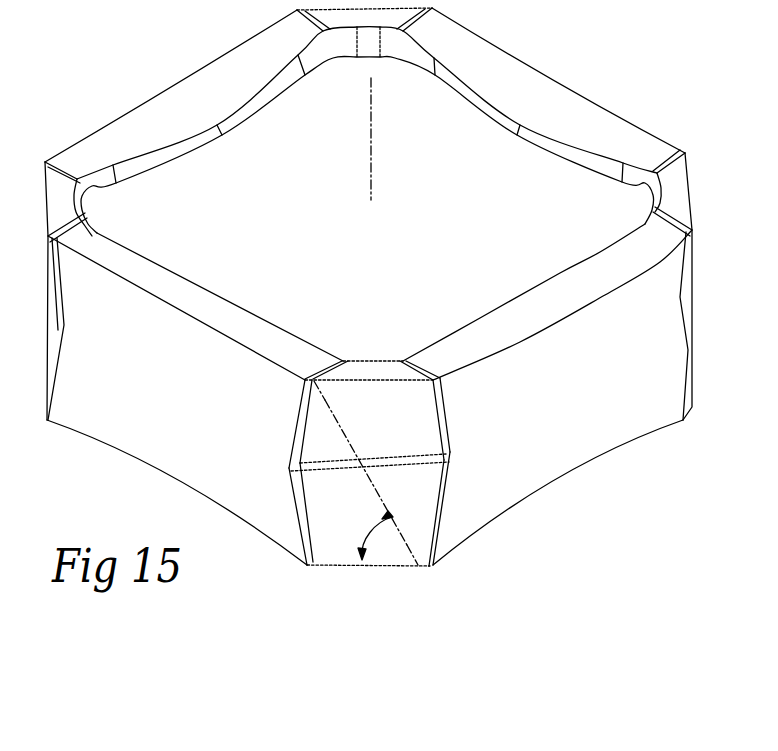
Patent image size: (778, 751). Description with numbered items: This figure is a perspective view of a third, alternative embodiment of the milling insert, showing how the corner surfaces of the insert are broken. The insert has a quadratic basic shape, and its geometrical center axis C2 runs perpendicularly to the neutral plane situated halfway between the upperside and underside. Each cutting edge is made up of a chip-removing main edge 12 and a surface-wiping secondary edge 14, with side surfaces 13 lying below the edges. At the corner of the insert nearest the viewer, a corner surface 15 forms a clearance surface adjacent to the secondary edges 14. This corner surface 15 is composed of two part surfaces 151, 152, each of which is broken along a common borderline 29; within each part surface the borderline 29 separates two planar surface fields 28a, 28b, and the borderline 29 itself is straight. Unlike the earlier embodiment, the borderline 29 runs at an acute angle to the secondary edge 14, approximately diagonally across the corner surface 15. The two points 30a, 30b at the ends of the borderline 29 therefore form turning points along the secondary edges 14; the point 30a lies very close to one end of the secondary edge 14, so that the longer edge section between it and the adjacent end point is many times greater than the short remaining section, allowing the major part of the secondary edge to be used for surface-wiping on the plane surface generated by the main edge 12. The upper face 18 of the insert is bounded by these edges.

The main edge 12 is at (133, 293).
The side surface 13 is at (151, 402).
The secondary edge 14 is at (392, 379).
The corner surface 15 is at (336, 567).
The top rake face 18 is at (522, 224).
The surface field 28a is at (421, 442).
The surface field 28b is at (346, 452).
The borderline 29 is at (343, 414).
The point 30a is at (316, 380).
The point 30b is at (426, 565).
The part surface 151 is at (312, 411).
The part surface 152 is at (320, 540).
The center axis C2 is at (385, 126).